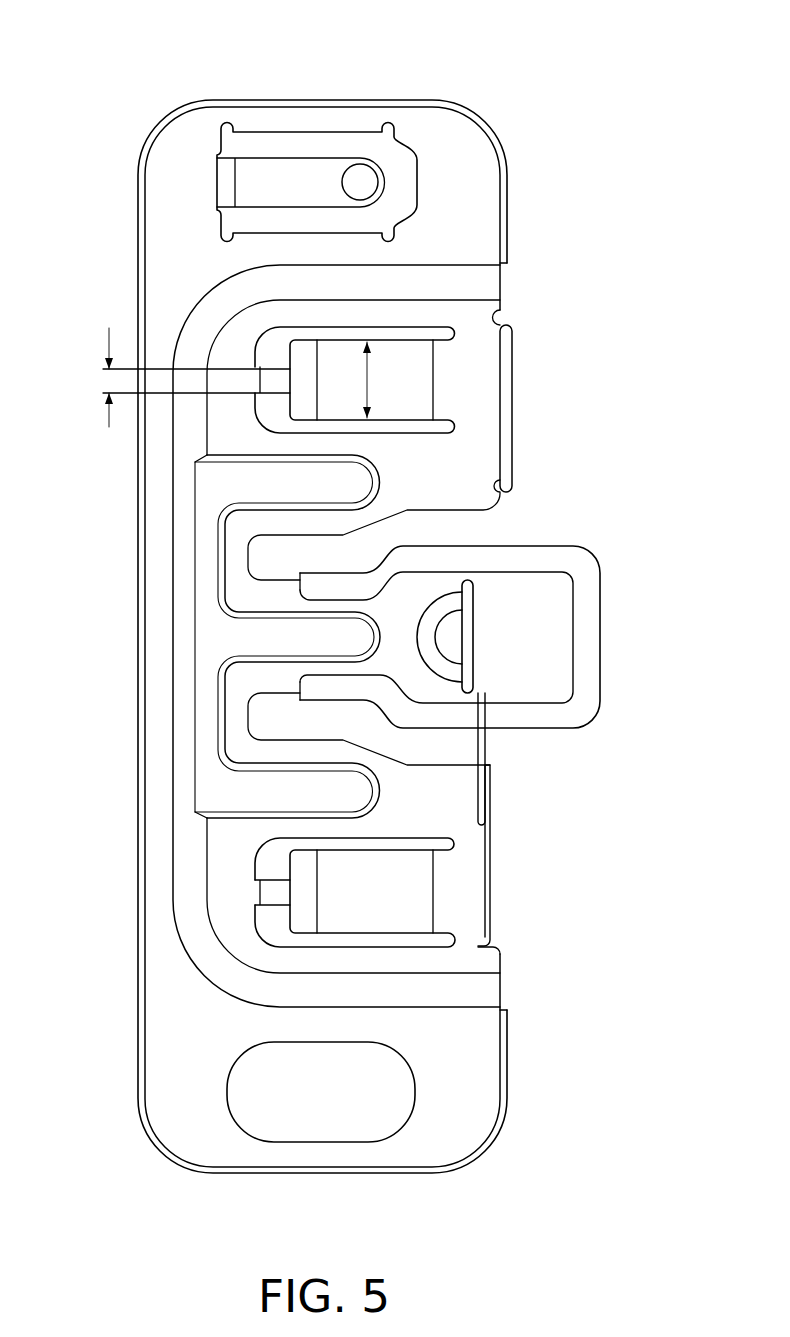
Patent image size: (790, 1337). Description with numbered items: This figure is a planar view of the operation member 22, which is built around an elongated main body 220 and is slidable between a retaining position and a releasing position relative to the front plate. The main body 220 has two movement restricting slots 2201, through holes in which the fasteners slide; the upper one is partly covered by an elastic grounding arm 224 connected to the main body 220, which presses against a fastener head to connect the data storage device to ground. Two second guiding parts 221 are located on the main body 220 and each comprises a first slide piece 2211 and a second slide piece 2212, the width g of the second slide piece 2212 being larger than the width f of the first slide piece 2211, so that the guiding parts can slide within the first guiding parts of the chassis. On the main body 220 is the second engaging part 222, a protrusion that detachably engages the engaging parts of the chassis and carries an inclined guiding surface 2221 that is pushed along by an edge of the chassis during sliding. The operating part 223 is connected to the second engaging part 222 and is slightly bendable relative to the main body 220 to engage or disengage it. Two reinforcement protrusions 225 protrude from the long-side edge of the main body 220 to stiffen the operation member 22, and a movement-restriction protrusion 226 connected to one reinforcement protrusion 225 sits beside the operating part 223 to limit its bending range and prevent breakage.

The operation member 22 is at (552, 25).
The main body 220 is at (168, 310).
The movement restricting slot 2201 is at (398, 157).
The elastic grounding arm 224 is at (317, 182).
The second guiding part 221 is at (620, 262).
The first slide piece 2211 is at (273, 380).
The second slide piece 2212 is at (397, 378).
The reinforcement protrusion 225 is at (513, 440).
The inclined guiding surface 2221 is at (430, 620).
The operating part 223 is at (543, 607).
The second engaging part 222 is at (452, 637).
The movement-restriction protrusion 226 is at (490, 748).